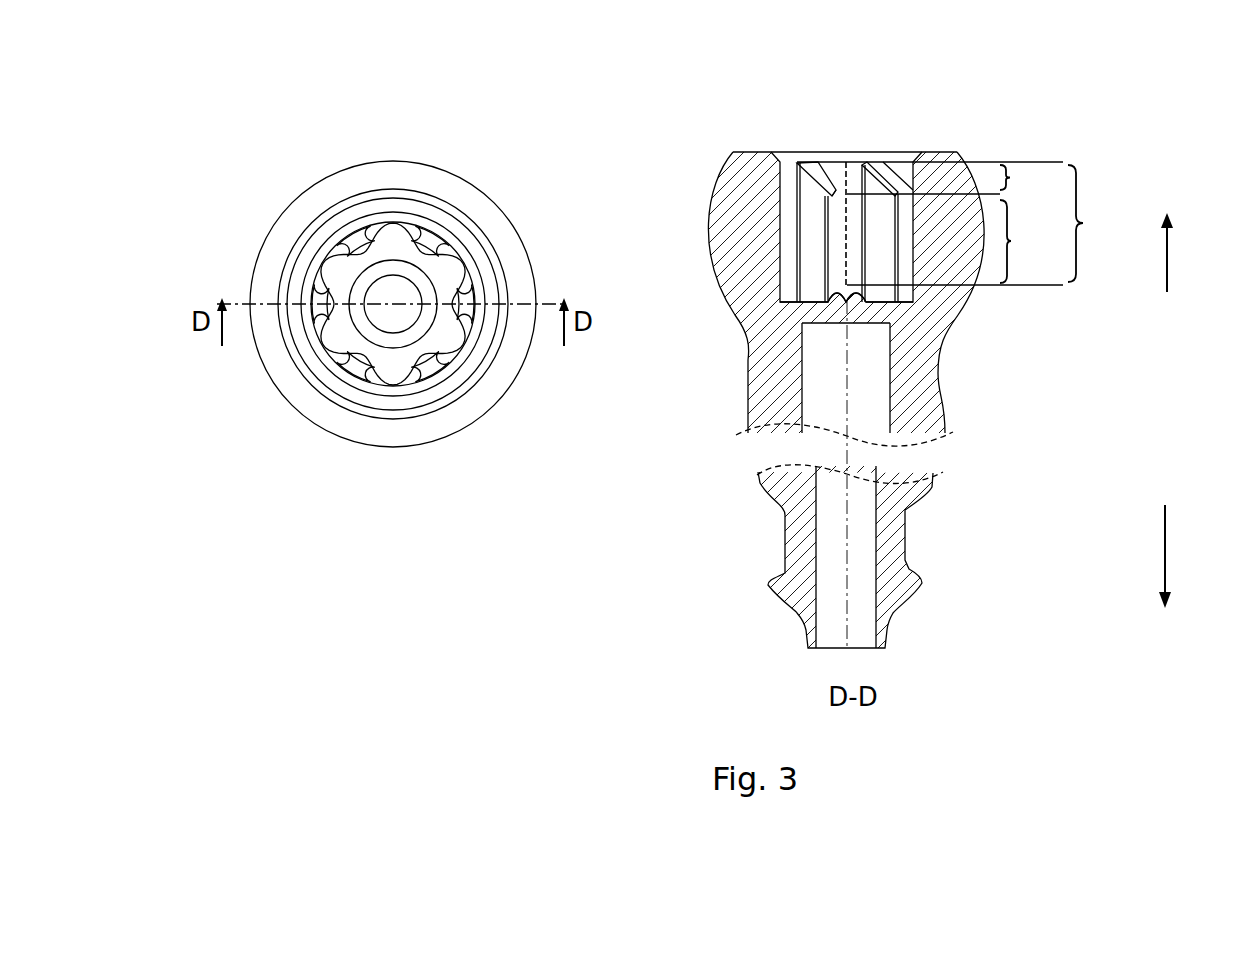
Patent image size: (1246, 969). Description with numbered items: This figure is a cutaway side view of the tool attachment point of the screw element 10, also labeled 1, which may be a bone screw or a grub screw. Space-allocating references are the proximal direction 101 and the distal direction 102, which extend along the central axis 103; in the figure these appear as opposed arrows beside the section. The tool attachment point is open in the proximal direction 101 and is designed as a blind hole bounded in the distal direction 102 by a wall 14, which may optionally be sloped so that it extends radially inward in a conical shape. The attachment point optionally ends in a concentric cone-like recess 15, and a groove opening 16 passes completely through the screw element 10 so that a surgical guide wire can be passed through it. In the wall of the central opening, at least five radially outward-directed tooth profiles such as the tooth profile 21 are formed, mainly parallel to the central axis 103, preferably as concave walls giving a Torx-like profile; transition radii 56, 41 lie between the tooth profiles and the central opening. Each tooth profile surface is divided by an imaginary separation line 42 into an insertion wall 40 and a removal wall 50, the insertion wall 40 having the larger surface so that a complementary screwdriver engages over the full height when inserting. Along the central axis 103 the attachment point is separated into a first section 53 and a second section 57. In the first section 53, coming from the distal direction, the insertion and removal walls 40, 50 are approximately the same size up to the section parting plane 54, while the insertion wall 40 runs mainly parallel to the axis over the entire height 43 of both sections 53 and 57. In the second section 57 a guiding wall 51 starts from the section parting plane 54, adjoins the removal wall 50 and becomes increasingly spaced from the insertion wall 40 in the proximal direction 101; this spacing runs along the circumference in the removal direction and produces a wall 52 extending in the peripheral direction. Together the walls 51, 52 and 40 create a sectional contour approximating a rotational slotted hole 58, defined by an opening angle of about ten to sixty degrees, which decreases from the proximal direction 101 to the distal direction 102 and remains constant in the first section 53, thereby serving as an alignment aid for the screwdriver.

The fastener 1 is at (322, 256).
The screw element 10 is at (208, 124).
The wall 14 is at (813, 312).
The concentric cone-like recess 15 is at (882, 153).
The groove opening 16 is at (820, 358).
The tooth profile 21 is at (852, 160).
The insertion wall 40 is at (853, 233).
The transition radius 41 is at (865, 248).
The imaginary separation line 42 is at (845, 268).
The height of both sections 43 is at (962, 223).
The removal wall 50 is at (836, 222).
The guiding wall 51 is at (812, 160).
The wall extending in the peripheral direction 52 is at (837, 160).
The first section 53 is at (1024, 241).
The section parting plane 54 is at (980, 193).
The transition radius 56 is at (826, 248).
The second section 57 is at (1024, 180).
The rotational slotted hole 58 is at (365, 227).
The proximal direction 101 is at (1192, 252).
The distal direction 102 is at (1191, 556).
The central axis 103 is at (847, 500).